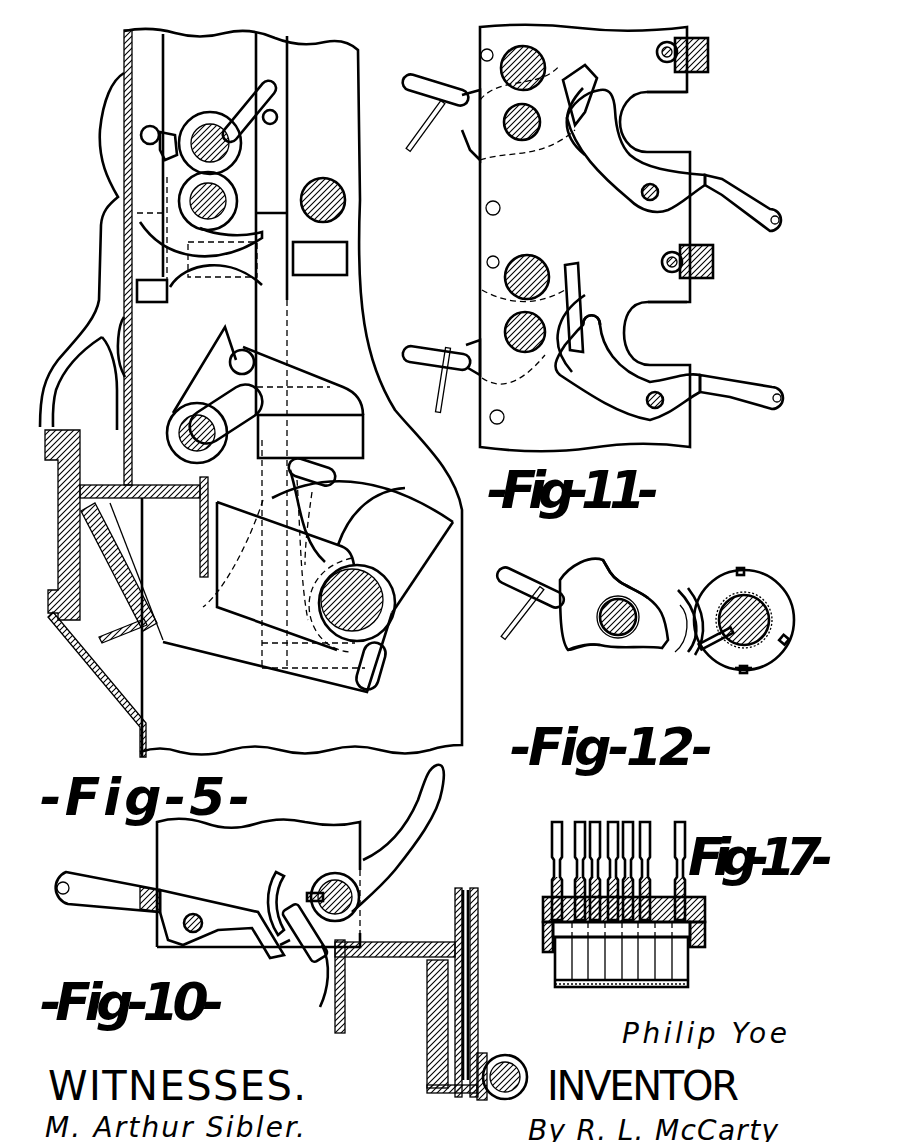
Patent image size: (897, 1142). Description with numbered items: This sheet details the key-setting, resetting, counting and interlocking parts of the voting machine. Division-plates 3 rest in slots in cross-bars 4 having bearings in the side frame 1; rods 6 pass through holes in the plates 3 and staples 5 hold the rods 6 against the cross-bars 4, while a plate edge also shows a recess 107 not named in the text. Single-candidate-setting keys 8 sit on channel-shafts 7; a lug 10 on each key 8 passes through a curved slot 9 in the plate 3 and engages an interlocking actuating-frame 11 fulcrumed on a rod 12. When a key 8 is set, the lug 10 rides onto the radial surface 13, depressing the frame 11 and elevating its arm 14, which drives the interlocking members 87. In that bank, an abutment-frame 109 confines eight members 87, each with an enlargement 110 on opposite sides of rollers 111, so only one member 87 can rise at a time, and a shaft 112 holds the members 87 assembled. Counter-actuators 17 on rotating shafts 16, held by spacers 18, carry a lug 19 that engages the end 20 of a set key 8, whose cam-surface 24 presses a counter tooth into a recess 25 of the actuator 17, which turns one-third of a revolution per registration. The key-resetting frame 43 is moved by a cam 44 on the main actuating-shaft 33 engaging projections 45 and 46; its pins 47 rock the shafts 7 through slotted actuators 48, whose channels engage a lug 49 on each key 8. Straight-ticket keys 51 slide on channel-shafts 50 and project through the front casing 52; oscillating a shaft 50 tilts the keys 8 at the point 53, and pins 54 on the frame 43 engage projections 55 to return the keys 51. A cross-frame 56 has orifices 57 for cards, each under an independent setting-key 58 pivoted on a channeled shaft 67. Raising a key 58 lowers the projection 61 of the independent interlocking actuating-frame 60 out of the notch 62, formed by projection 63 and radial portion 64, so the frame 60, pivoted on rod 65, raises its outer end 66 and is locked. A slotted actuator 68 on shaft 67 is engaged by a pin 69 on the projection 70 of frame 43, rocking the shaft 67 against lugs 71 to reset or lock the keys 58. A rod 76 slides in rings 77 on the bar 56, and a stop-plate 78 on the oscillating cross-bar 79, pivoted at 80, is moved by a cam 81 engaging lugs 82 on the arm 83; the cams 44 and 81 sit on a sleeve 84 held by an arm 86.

In FIG. 5, the side frame 1 is at (352, 216).
In FIG. 11, the division-plate 3 is at (585, 238).
In FIG. 10, the division-plate 3 is at (258, 883).
In FIG. 11, the cross-bar 4 is at (710, 50).
In FIG. 11, the staple 5 is at (660, 48).
In FIG. 11, the rod 6 is at (664, 62).
In FIG. 5, the channel-shaft 7 is at (230, 190).
In FIG. 11, the channel-shaft 7 is at (506, 128).
In FIG. 12, the channel-shaft 7 is at (600, 620).
In FIG. 11, the single-candidate-setting key 8 is at (462, 135).
In FIG. 12, the single-candidate-setting key 8 is at (581, 604).
In FIG. 11, the curved slot 9 is at (568, 75).
In FIG. 11, the lug 10 is at (602, 90).
In FIG. 12, the lug 10 is at (682, 595).
In FIG. 11, the interlocking actuating-frame 11 is at (605, 160).
In FIG. 11, the rod 12 is at (645, 198).
In FIG. 11, the radial surface 13 is at (590, 68).
In FIG. 11, the arm 14 is at (725, 190).
In FIG. 5, the rotating shaft 16 is at (323, 177).
In FIG. 12, the rotating shaft 16 is at (765, 605).
In FIG. 12, the counter-actuator 17 is at (760, 585).
In FIG. 12, the spacer 18 is at (795, 616).
In FIG. 12, the lug 19 is at (736, 570).
In FIG. 12, the projection 20 is at (680, 612).
In FIG. 12, the cam-surface 24 is at (578, 652).
In FIG. 12, the recess 25 is at (744, 672).
In FIG. 5, the main actuating-shaft 33 is at (392, 626).
In FIG. 5, the key-resetting frame 43 is at (290, 316).
In FIG. 5, the cam 44 is at (383, 465).
In FIG. 5, the projection 45 is at (310, 436).
In FIG. 5, the projection 46 is at (310, 655).
In FIG. 5, the pin 47 is at (160, 137).
In FIG. 5, the slotted actuator 48 is at (173, 137).
In FIG. 11, the lug 49 is at (527, 224).
In FIG. 12, the lug 49 is at (618, 638).
In FIG. 5, the channel-shaft 50 is at (232, 143).
In FIG. 11, the channel-shaft 50 is at (505, 52).
In FIG. 5, the straight-ticket key 51 is at (95, 300).
In FIG. 5, the front casing 52 is at (124, 52).
In FIG. 12, the point 53 is at (622, 572).
In FIG. 5, the pin 54 is at (278, 117).
In FIG. 5, the projection 55 is at (280, 93).
In FIG. 5, the cross-frame 56 is at (60, 547).
In FIG. 10, the cross-frame 56 is at (478, 1006).
In FIG. 10, the orifice 57 is at (472, 968).
In FIG. 10, the independent setting-key 58 is at (410, 840).
In FIG. 10, the independent interlocking actuating-frame 60 is at (190, 912).
In FIG. 10, the projection 61 is at (270, 910).
In FIG. 10, the notch 62 is at (310, 958).
In FIG. 10, the projection 63 is at (318, 1000).
In FIG. 10, the radial portion 64 is at (283, 948).
In FIG. 10, the rod 65 is at (200, 915).
In FIG. 10, the outer end 66 is at (103, 890).
In FIG. 5, the channel-shaft 67 is at (210, 450).
In FIG. 10, the channel-shaft 67 is at (360, 900).
In FIG. 5, the slotted actuator 68 is at (210, 365).
In FIG. 5, the pin 69 is at (241, 350).
In FIG. 5, the projection 70 is at (302, 383).
In FIG. 10, the lug 71 is at (312, 890).
In FIG. 10, the rod 76 is at (500, 1090).
In FIG. 10, the ring 77 is at (508, 1055).
In FIG. 5, the stop-plate 78 is at (125, 644).
In FIG. 10, the stop-plate 78 is at (445, 1092).
In FIG. 5, the oscillating cross-bar 79 is at (130, 593).
In FIG. 10, the oscillating cross-bar 79 is at (427, 1020).
In FIG. 5, the pivot 80 is at (122, 513).
In FIG. 10, the pivot 80 is at (425, 978).
In FIG. 5, the cam 81 is at (345, 545).
In FIG. 5, the lug 82 is at (322, 482).
In FIG. 5, the arm 83 is at (271, 576).
In FIG. 5, the sleeve 84 is at (408, 592).
In FIG. 5, the arm 86 is at (233, 553).
In FIG. 17, the interlocking member 87 is at (657, 823).
In FIG. 11, the notch 107 is at (674, 217).
In FIG. 17, the abutment-frame 109 is at (706, 910).
In FIG. 17, the enlargement 110 is at (603, 982).
In FIG. 17, the roller 111 is at (690, 965).
In FIG. 17, the shaft 112 is at (706, 930).